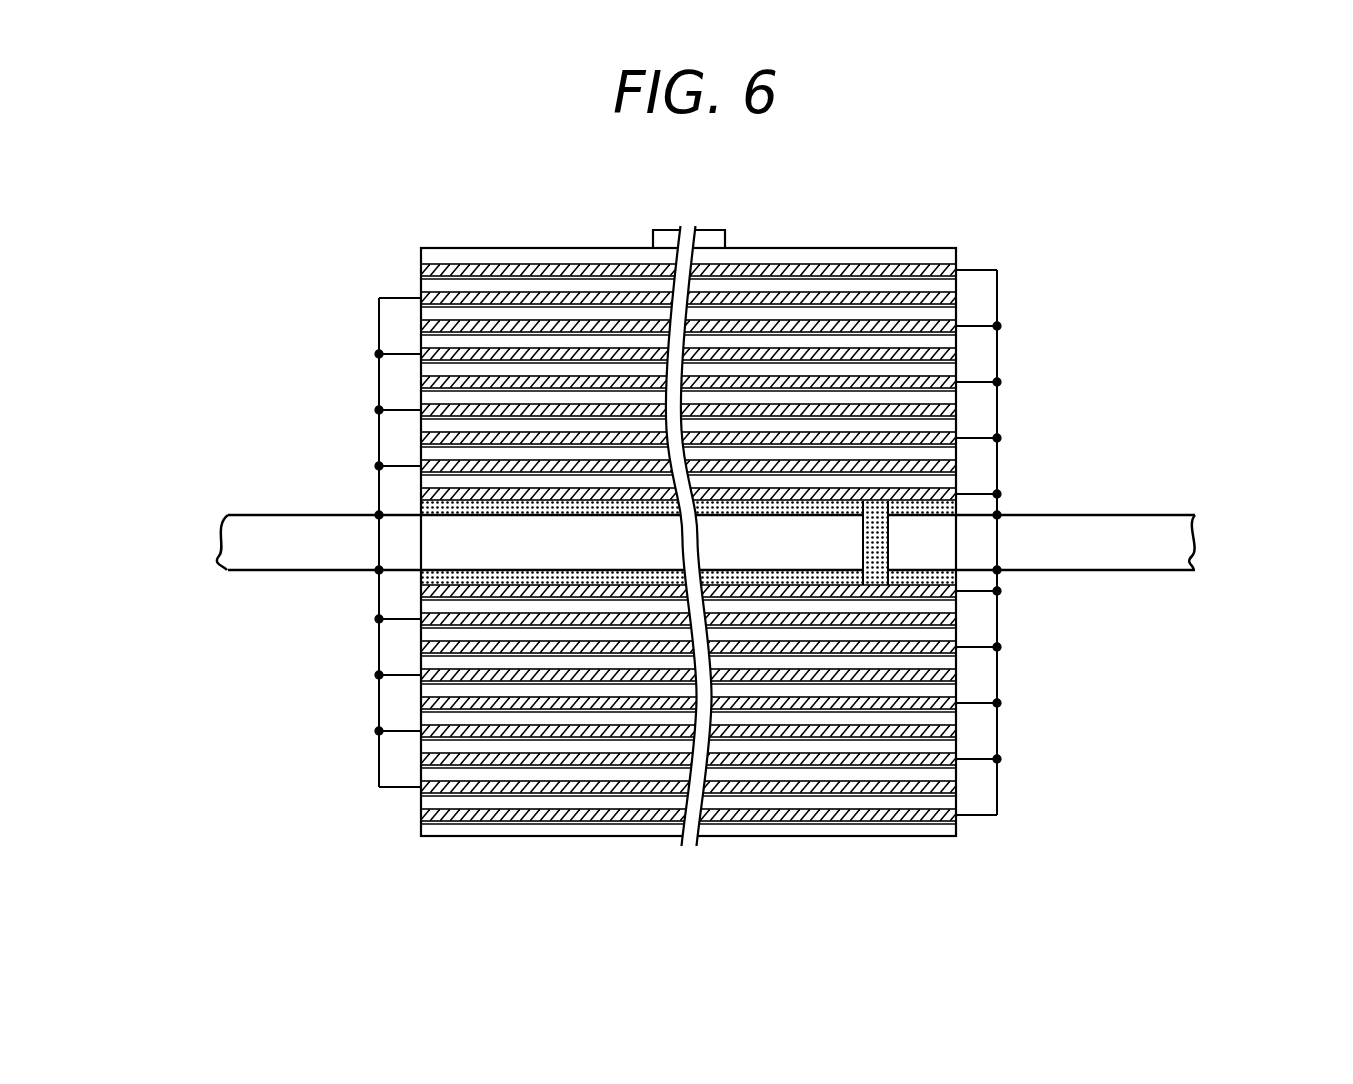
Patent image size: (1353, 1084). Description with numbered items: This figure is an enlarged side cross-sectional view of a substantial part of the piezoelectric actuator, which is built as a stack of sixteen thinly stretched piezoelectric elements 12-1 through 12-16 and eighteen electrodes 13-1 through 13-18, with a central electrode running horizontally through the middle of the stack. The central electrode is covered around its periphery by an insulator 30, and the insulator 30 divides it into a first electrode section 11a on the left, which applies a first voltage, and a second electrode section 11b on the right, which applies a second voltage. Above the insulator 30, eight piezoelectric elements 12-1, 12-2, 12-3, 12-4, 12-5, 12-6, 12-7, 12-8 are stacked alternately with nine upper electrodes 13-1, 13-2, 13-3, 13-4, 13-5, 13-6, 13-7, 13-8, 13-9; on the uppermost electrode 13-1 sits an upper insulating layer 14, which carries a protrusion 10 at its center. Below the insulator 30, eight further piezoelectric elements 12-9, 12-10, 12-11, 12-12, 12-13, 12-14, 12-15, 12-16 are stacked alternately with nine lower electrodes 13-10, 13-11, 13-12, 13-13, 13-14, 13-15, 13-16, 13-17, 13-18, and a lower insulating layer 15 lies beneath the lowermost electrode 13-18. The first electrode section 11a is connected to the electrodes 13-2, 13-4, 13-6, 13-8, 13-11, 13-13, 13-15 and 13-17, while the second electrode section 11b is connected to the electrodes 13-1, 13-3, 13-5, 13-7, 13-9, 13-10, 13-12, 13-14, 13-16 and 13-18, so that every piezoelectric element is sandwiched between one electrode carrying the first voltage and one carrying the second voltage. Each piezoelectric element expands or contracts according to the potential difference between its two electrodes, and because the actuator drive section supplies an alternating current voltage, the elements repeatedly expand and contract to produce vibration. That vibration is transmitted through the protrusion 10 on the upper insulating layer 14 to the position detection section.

The protrusion 10 is at (708, 234).
The upper insulating layer 14 is at (864, 256).
The lower insulating layer 15 is at (540, 832).
The first electrode section 11a is at (235, 549).
The second electrode section 11b is at (1178, 540).
The insulator 30 is at (879, 545).
The piezoelectric element 12-1 is at (447, 286).
The piezoelectric element 12-2 is at (447, 314).
The piezoelectric element 12-3 is at (447, 342).
The piezoelectric element 12-4 is at (447, 370).
The piezoelectric element 12-5 is at (447, 398).
The piezoelectric element 12-6 is at (447, 426).
The piezoelectric element 12-7 is at (447, 454).
The piezoelectric element 12-8 is at (447, 482).
The piezoelectric element 12-9 is at (447, 607).
The piezoelectric element 12-10 is at (447, 635).
The piezoelectric element 12-11 is at (447, 663).
The piezoelectric element 12-12 is at (447, 691).
The piezoelectric element 12-13 is at (447, 719).
The piezoelectric element 12-14 is at (447, 747).
The piezoelectric element 12-15 is at (447, 775).
The piezoelectric element 12-16 is at (447, 803).
The electrode 13-1 is at (940, 270).
The electrode 13-2 is at (940, 298).
The electrode 13-3 is at (940, 326).
The electrode 13-4 is at (940, 354).
The electrode 13-5 is at (940, 382).
The electrode 13-6 is at (940, 410).
The electrode 13-7 is at (940, 438).
The electrode 13-8 is at (940, 466).
The electrode 13-9 is at (940, 494).
The electrode 13-10 is at (940, 591).
The electrode 13-11 is at (940, 619).
The electrode 13-12 is at (940, 647).
The electrode 13-13 is at (940, 675).
The electrode 13-14 is at (940, 703).
The electrode 13-15 is at (940, 731).
The electrode 13-16 is at (940, 759).
The electrode 13-17 is at (940, 787).
The electrode 13-18 is at (940, 815).